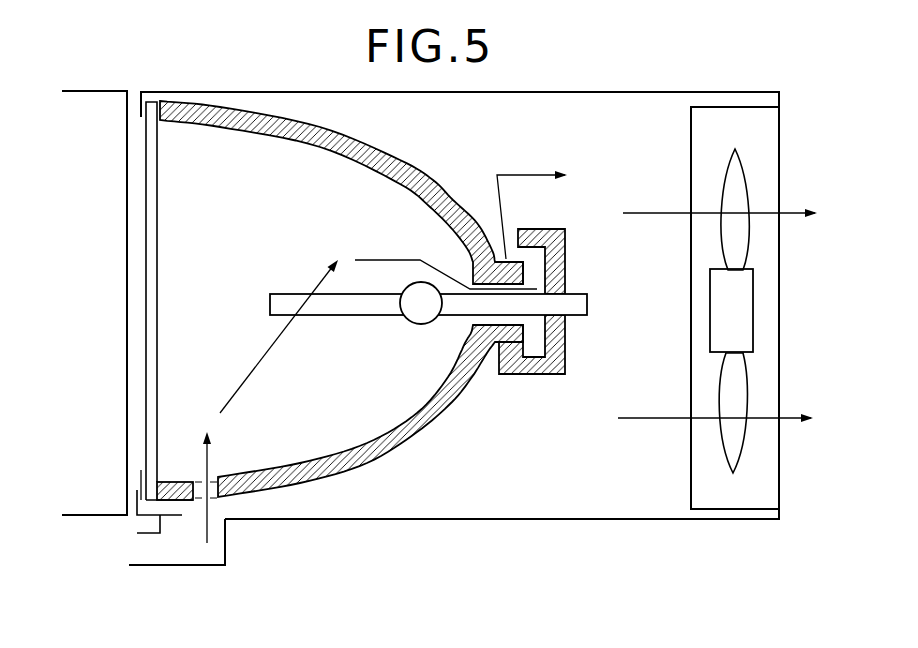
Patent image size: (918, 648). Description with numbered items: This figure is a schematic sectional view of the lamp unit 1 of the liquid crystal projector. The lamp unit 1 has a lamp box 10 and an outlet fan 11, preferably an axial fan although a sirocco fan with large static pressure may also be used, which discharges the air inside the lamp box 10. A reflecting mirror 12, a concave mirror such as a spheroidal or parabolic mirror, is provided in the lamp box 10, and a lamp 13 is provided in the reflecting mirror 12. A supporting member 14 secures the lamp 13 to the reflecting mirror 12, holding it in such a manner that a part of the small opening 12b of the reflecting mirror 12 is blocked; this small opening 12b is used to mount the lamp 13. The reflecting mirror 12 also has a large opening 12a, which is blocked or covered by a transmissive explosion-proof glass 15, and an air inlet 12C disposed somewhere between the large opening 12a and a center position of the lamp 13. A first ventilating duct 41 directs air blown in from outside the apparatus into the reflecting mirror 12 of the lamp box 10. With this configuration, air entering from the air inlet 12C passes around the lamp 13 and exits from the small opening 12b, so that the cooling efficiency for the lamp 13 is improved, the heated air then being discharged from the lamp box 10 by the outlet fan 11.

The lamp unit 1 is at (471, 530).
The lamp box 10 is at (572, 520).
The outlet fan 11 is at (727, 180).
The reflecting mirror 12 is at (438, 417).
The large opening 12a is at (130, 435).
The small opening 12b is at (518, 317).
The air inlet 12C is at (212, 497).
The lamp 13 is at (370, 316).
The supporting member 14 is at (566, 257).
The transmissive explosion-proof glass 15 is at (147, 227).
The first ventilating duct 41 is at (177, 567).